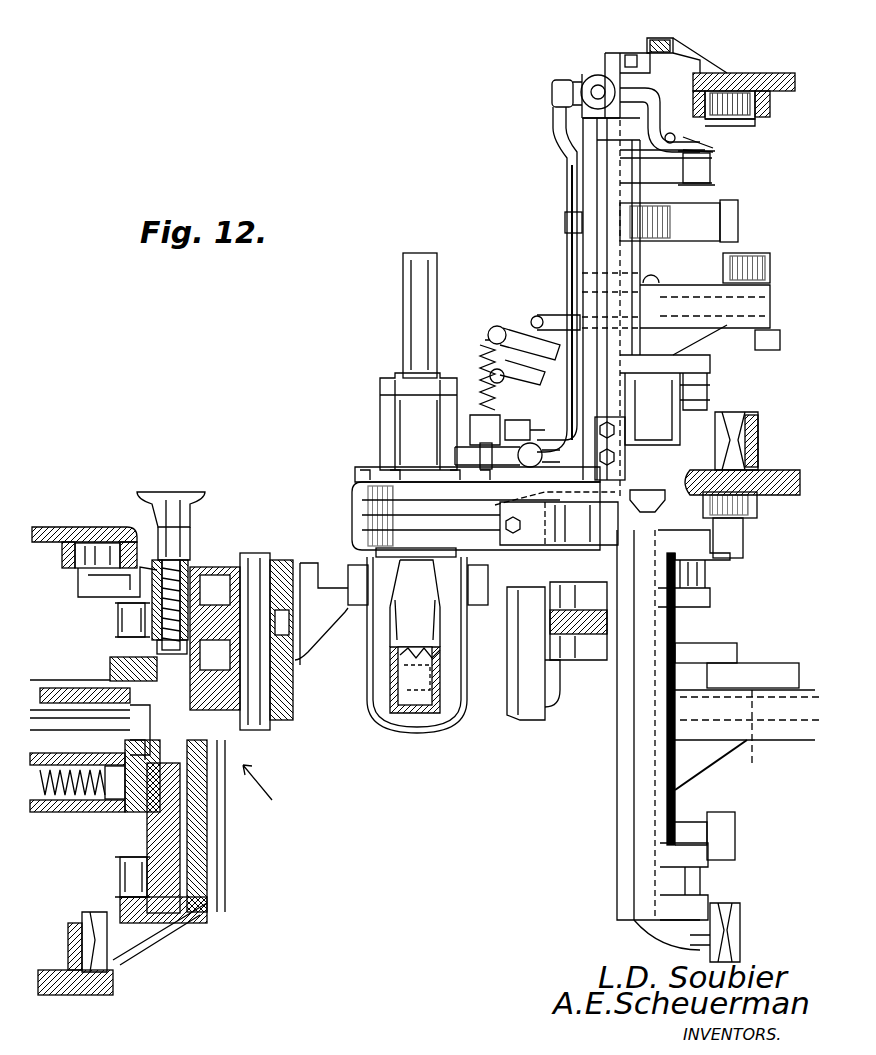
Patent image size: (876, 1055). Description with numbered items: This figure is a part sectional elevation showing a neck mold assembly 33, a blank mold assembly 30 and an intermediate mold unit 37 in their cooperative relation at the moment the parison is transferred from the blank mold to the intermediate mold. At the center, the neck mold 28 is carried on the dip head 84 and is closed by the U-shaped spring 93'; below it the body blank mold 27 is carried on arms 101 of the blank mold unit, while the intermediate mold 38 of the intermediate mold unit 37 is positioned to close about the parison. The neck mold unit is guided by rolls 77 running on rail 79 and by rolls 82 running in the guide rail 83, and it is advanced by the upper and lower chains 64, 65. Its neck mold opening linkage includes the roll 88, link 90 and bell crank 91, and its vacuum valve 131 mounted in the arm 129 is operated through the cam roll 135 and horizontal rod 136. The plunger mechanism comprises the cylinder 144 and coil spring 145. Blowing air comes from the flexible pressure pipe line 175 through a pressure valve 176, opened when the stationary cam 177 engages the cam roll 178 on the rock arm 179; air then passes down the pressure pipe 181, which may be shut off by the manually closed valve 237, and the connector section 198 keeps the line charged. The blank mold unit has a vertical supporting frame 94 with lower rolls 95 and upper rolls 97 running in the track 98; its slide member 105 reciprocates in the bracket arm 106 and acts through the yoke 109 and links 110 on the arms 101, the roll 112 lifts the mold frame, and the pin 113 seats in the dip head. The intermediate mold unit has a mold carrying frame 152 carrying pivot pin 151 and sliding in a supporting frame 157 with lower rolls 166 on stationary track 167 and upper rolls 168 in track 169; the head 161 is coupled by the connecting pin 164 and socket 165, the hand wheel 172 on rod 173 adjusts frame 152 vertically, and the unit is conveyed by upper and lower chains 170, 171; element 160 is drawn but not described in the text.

The pressure valve 176 is at (560, 85).
The rock arm 179 is at (620, 56).
The cam roll 178 is at (645, 50).
The stationary cam 177 is at (672, 36).
The guide rail 83 is at (770, 72).
The rolls 82 is at (756, 119).
The pressure pipe line 175 is at (714, 150).
The upper chain 64 is at (712, 172).
The connector section 198 is at (690, 232).
The roll 88 is at (770, 262).
The link 90 is at (660, 278).
The cam roll 135 is at (778, 350).
The lower chain 65 is at (708, 388).
The rolls 77 is at (735, 417).
The rail 79 is at (775, 476).
The arm 129 is at (664, 498).
The track 98 is at (758, 505).
The upper rolls 97 is at (744, 525).
The neck mold assembly 33 is at (556, 220).
The pressure pipe 181 is at (568, 268).
The coil spring 145 is at (412, 322).
The cylinder 144 is at (398, 417).
The bell crank 91 is at (518, 330).
The horizontal rod 136 is at (558, 315).
The vacuum valve 131 is at (470, 405).
The valve 237 is at (508, 436).
The dip head 84 is at (355, 480).
The neck mold 28 is at (352, 520).
The U-shaped spring 93' is at (556, 527).
The intermediate mold 38 is at (375, 664).
The link 160 is at (335, 570).
The vertical supporting frame 94 is at (640, 806).
The blank mold assembly 30 is at (612, 742).
The pin 113 is at (575, 585).
The arms 101 is at (540, 640).
The body blank mold 27 is at (525, 715).
The links 110 is at (692, 644).
The yoke 109 is at (745, 670).
The slide member 105 is at (750, 748).
The bracket arm 106 is at (720, 760).
The roll 112 is at (725, 815).
The rolls 95 is at (735, 905).
The track 169 is at (62, 528).
The upper rolls 168 is at (92, 540).
The hand wheel 172 is at (195, 495).
The rod 173 is at (180, 556).
The upper chain 170 is at (117, 618).
The pivot pin 151 is at (260, 725).
The connecting pin 164 is at (128, 722).
The socket 165 is at (118, 735).
The head 161 is at (75, 812).
The mold carrying frame 152 is at (200, 815).
The lower chain 171 is at (118, 878).
The supporting frame 157 is at (185, 925).
The lower rolls 166 is at (110, 960).
The stationary track 167 is at (90, 995).
The intermediate mold unit 37 is at (269, 781).